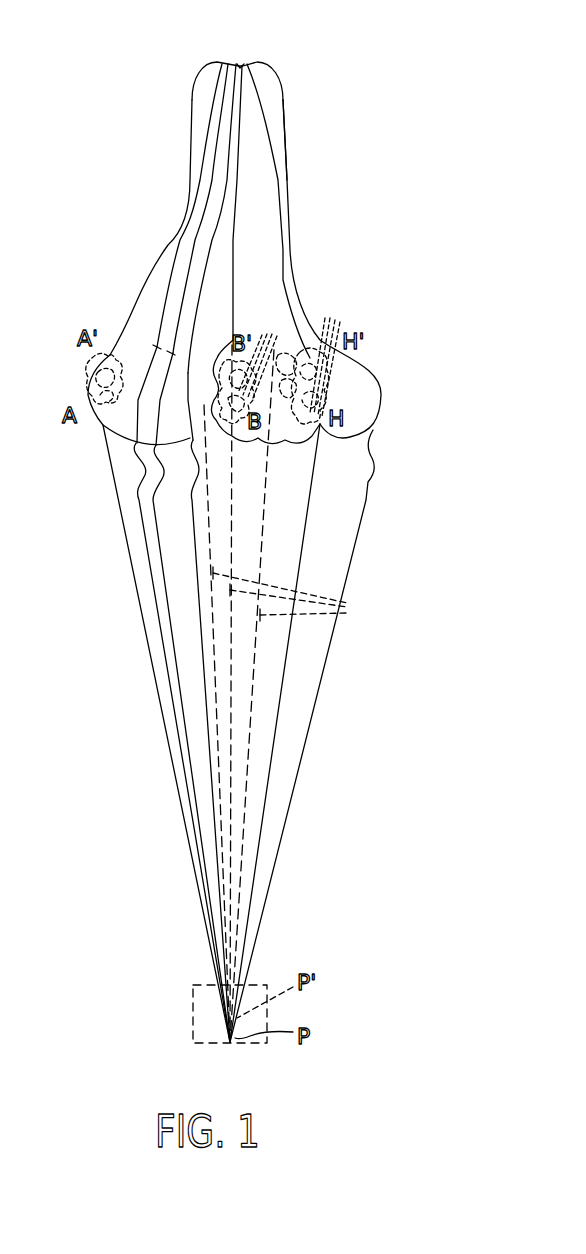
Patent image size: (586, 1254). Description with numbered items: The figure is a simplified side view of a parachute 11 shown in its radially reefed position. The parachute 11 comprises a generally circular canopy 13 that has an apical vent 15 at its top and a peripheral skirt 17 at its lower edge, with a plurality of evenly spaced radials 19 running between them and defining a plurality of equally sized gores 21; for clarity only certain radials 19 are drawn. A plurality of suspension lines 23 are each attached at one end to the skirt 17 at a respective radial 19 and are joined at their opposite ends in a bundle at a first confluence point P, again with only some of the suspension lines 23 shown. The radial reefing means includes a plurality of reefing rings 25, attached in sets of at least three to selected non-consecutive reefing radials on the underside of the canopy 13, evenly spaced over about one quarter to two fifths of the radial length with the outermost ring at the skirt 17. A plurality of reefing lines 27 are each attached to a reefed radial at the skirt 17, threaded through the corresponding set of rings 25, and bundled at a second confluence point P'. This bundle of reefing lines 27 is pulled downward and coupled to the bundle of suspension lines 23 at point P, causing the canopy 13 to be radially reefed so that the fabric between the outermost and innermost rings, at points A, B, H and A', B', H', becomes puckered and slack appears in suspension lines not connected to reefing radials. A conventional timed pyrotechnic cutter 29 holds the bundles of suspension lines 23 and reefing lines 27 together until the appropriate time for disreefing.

The parachute 11 is at (480, 291).
The canopy 13 is at (298, 209).
The apical vent 15 is at (240, 64).
The peripheral skirt 17 is at (373, 434).
The radials 19 is at (213, 250).
The gores 21 is at (215, 207).
The suspension lines 23 is at (187, 714).
The reefing rings 25 is at (92, 373).
The reefing lines 27 is at (296, 594).
The timed pyrotechnic cutter 29 is at (192, 1000).